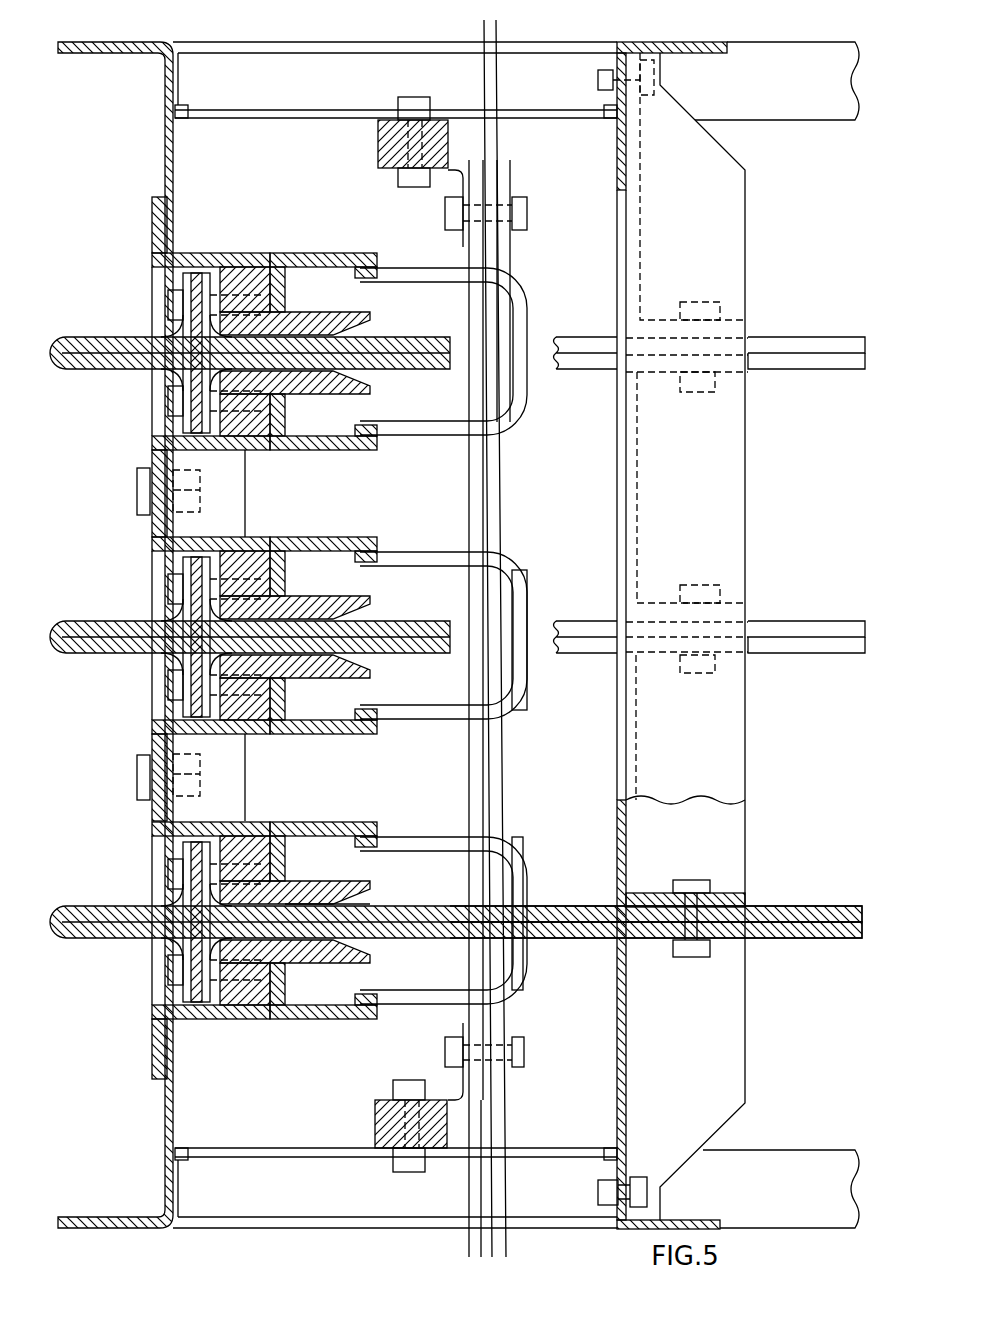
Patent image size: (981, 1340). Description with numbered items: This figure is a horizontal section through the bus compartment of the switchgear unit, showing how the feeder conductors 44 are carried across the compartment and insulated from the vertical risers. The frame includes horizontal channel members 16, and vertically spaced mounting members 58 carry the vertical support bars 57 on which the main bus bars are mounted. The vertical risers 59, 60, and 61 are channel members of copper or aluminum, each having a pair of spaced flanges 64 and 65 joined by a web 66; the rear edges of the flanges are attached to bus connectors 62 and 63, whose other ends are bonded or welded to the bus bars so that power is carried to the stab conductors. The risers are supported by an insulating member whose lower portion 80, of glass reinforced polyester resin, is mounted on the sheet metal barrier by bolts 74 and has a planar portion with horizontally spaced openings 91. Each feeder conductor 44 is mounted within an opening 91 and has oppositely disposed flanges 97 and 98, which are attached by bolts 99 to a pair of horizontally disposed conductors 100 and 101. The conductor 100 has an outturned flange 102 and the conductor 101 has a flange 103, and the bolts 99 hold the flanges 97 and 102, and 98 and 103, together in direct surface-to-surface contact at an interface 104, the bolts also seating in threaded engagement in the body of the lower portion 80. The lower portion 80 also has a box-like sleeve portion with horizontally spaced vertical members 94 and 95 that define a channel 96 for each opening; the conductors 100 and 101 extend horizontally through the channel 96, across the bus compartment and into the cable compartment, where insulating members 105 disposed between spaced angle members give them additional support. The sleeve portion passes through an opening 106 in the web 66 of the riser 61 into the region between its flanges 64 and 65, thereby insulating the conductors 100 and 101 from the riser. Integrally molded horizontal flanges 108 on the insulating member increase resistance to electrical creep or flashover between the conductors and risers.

The horizontal channel member 16 is at (797, 117).
The feeder conductor 44 is at (66, 339).
The vertical support bar 57 is at (378, 142).
The mounting member 58 is at (247, 118).
The vertical riser 59 is at (290, 254).
The vertical riser 60 is at (305, 537).
The vertical riser 61 is at (310, 822).
The bus connector 62 is at (440, 279).
The bus connector 63 is at (432, 422).
The flange 64 is at (360, 254).
The flange 65 is at (345, 450).
The web 66 is at (284, 283).
The bolt 74 is at (136, 490).
The lower portion 80 is at (158, 247).
The opening 91 is at (189, 925).
The vertical member 94 is at (320, 394).
The vertical member 95 is at (335, 317).
The channel 96 is at (327, 882).
The flange 97 is at (163, 919).
The flange 98 is at (145, 974).
The bolt 99 is at (169, 926).
The horizontal conductor 100 is at (590, 337).
The horizontal conductor 101 is at (590, 370).
The outturned flange 102 is at (211, 817).
The flange 103 is at (211, 1024).
The interface 104 is at (143, 874).
The electrically insulating member 105 is at (746, 757).
The opening 106 is at (290, 970).
The horizontal flange 108 is at (245, 478).